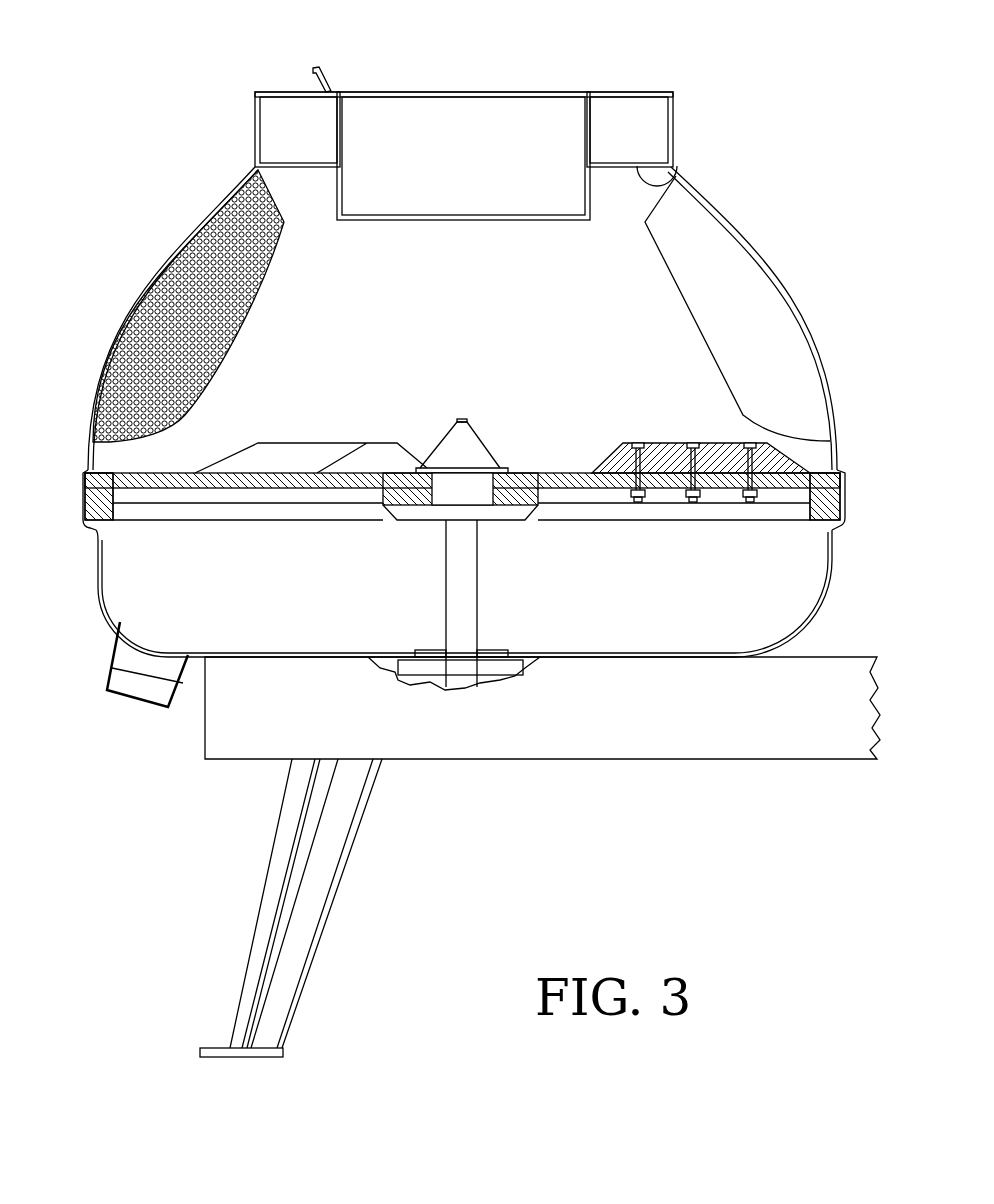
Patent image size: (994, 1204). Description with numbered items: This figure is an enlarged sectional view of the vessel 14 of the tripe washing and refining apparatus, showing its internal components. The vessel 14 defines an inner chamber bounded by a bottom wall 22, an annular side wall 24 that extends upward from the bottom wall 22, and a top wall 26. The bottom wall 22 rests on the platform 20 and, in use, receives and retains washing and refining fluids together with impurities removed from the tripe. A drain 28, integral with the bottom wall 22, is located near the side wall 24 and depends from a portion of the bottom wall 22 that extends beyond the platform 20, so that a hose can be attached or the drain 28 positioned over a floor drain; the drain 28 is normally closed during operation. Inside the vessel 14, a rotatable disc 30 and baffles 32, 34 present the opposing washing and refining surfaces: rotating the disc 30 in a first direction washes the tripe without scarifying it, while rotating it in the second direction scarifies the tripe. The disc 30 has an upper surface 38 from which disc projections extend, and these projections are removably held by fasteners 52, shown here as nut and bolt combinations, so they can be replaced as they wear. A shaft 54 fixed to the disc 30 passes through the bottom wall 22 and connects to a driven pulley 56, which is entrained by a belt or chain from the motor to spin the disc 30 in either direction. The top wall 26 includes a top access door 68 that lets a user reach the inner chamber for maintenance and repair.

The vessel 14 is at (138, 104).
The platform 20 is at (600, 737).
The bottom wall 22 is at (705, 655).
The annular side wall 24 is at (80, 456).
The top wall 26 is at (676, 180).
The drain 28 is at (118, 655).
The rotatable disc 30 is at (84, 496).
The baffle 32 is at (760, 288).
The baffle 34 is at (162, 270).
The upper surface 38 is at (575, 471).
The fasteners 52 is at (748, 443).
The shaft 54 is at (473, 577).
The driven pulley 56 is at (518, 668).
The top access door 68 is at (473, 108).